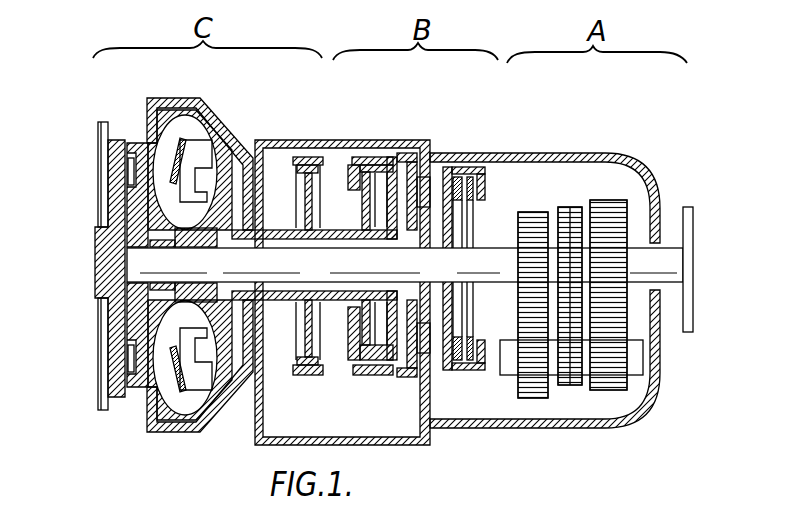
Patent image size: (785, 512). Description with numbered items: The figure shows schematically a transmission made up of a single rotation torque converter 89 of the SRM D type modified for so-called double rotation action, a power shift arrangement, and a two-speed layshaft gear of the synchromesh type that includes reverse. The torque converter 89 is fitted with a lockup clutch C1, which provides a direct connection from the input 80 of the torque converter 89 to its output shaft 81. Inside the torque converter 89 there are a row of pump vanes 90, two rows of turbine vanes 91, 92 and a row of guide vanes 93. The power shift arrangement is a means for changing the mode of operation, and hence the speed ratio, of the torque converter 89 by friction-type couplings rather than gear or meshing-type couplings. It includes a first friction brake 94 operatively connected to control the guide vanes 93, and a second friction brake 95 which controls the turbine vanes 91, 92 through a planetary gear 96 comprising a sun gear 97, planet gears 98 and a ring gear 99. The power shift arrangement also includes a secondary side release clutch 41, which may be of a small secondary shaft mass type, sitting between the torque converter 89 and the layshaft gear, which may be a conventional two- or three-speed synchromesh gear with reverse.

The secondary side release clutch 41 is at (453, 168).
The input 80 is at (93, 255).
The output shaft 81 is at (410, 269).
The torque converter 89 is at (141, 124).
The pump vanes 90 is at (172, 147).
The turbine vanes 91 is at (222, 152).
The turbine vanes 92 is at (245, 163).
The guide vanes 93 is at (198, 160).
The first friction brake 94 is at (313, 157).
The second friction brake 95 is at (398, 160).
The planetary gear 96 is at (345, 350).
The sun gear 97 is at (373, 197).
The planet gears 98 is at (373, 333).
The ring gear 99 is at (340, 173).
The lockup clutch C1 is at (127, 170).